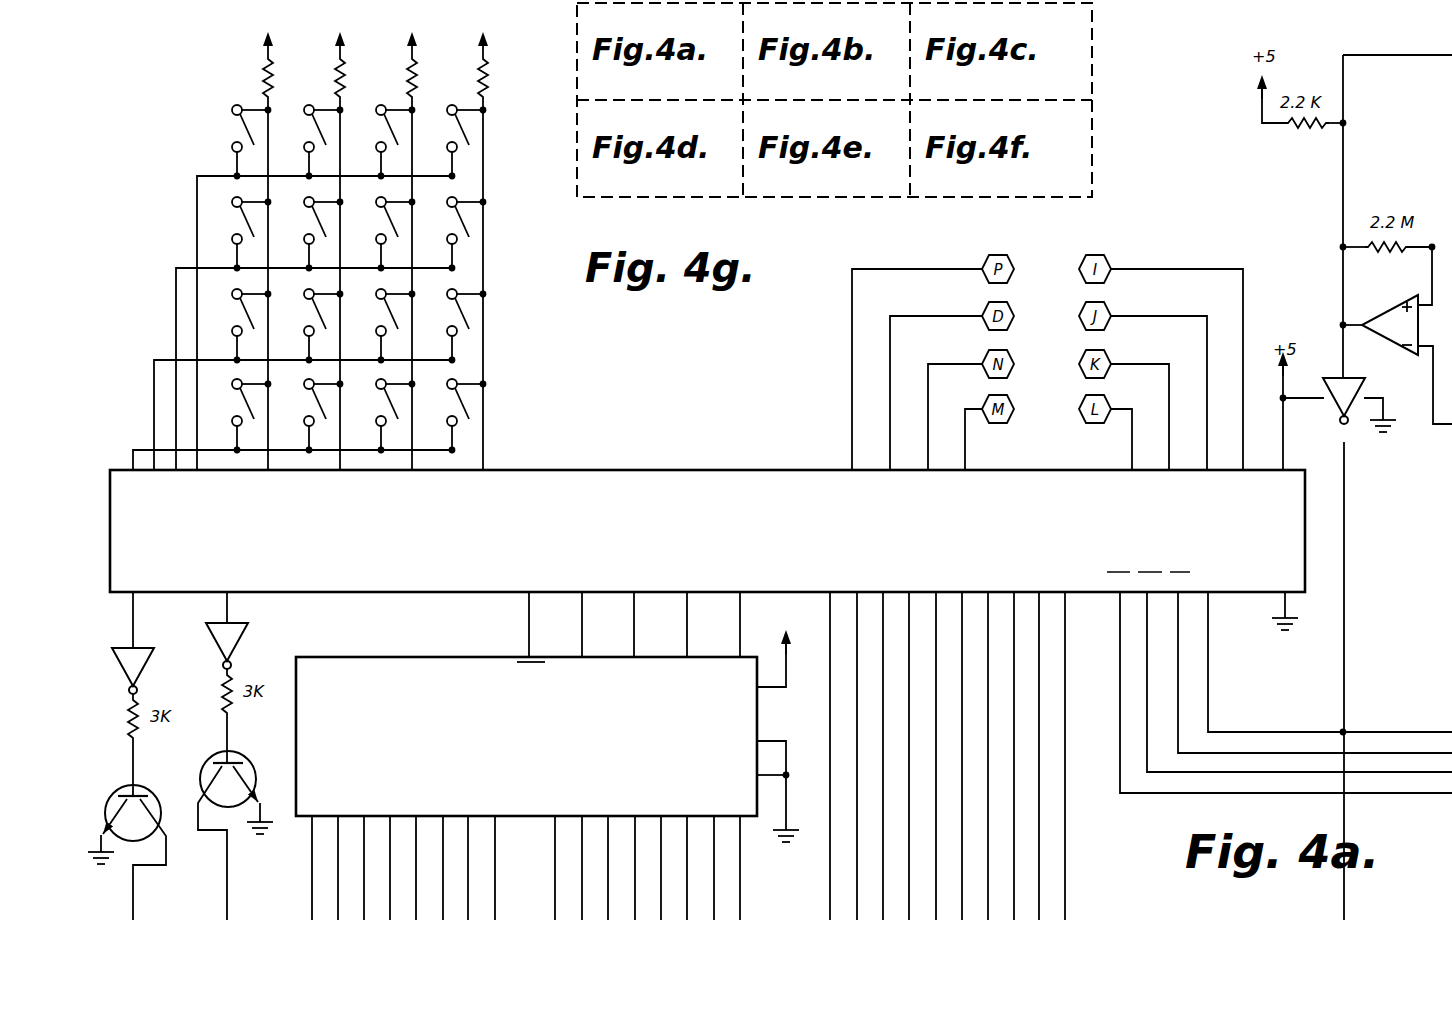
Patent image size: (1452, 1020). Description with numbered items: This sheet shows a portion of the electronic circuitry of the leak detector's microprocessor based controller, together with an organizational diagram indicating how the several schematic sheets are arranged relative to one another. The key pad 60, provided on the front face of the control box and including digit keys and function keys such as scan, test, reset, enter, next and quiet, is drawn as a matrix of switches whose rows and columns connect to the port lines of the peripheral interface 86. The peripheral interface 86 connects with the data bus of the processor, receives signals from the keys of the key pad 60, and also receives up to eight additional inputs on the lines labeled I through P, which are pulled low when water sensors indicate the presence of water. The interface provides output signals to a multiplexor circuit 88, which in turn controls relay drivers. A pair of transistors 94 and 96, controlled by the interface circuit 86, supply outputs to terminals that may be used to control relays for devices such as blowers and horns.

The key pad 60 is at (506, 343).
The peripheral interface 86 is at (664, 475).
The multiplexor circuit 88 is at (433, 667).
The transistor 94 is at (127, 792).
The transistor 96 is at (219, 758).